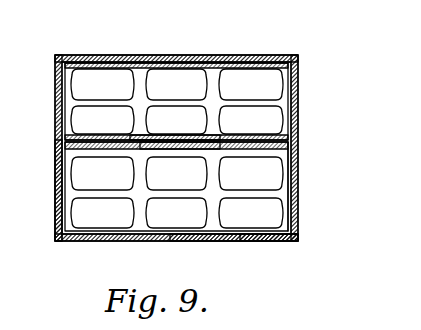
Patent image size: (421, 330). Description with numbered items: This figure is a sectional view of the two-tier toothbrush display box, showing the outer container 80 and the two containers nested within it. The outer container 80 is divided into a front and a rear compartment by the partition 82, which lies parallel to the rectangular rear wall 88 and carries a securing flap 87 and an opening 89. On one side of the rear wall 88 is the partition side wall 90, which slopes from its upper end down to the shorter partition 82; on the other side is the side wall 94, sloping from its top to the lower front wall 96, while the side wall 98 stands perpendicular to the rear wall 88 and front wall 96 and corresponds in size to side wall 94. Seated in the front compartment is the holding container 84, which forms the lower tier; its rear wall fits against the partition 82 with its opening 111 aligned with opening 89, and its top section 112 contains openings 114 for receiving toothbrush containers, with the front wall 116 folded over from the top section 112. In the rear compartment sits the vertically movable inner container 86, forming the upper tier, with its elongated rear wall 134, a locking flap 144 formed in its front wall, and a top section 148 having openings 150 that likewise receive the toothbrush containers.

The outer container 80 is at (120, 52).
The rear wall 88 is at (165, 55).
The rear wall 134 is at (232, 63).
The openings 150 is at (272, 83).
The top section 148 is at (262, 117).
The inner container 86 is at (281, 103).
The side wall 94 is at (296, 125).
The partition side wall 90 is at (62, 106).
The side wall 98 is at (55, 172).
The partition 82 is at (83, 137).
The locking flap 144 is at (160, 139).
The opening 89 is at (143, 150).
The opening 111 is at (163, 150).
The securing flap 87 is at (292, 168).
The top section 112 is at (253, 183).
The openings 114 is at (254, 221).
The front wall 116 is at (152, 242).
The front wall 96 is at (190, 244).
The holding container 84 is at (271, 232).